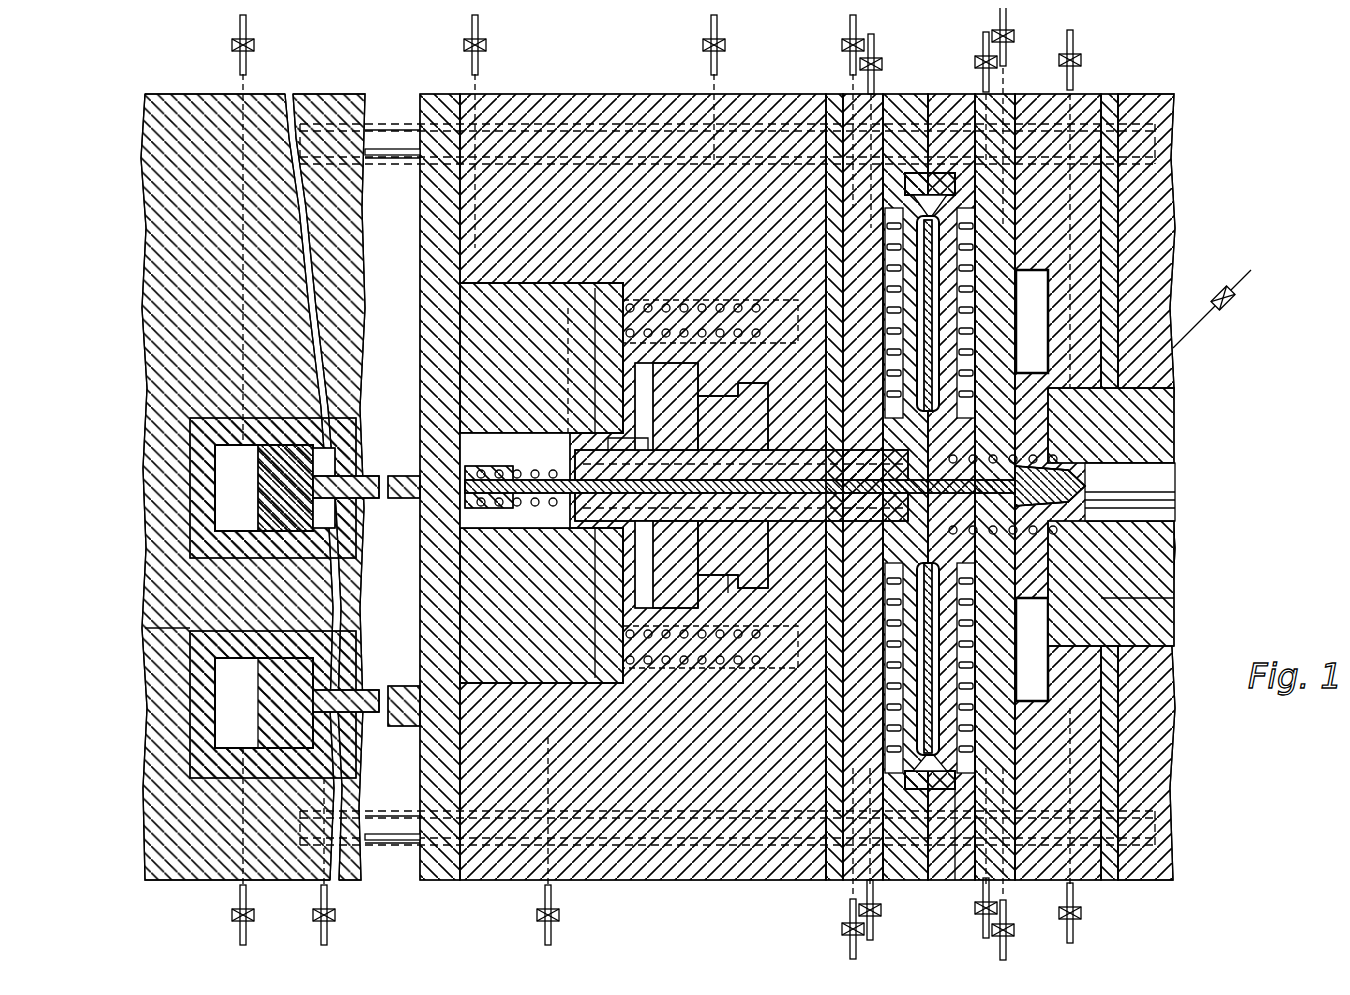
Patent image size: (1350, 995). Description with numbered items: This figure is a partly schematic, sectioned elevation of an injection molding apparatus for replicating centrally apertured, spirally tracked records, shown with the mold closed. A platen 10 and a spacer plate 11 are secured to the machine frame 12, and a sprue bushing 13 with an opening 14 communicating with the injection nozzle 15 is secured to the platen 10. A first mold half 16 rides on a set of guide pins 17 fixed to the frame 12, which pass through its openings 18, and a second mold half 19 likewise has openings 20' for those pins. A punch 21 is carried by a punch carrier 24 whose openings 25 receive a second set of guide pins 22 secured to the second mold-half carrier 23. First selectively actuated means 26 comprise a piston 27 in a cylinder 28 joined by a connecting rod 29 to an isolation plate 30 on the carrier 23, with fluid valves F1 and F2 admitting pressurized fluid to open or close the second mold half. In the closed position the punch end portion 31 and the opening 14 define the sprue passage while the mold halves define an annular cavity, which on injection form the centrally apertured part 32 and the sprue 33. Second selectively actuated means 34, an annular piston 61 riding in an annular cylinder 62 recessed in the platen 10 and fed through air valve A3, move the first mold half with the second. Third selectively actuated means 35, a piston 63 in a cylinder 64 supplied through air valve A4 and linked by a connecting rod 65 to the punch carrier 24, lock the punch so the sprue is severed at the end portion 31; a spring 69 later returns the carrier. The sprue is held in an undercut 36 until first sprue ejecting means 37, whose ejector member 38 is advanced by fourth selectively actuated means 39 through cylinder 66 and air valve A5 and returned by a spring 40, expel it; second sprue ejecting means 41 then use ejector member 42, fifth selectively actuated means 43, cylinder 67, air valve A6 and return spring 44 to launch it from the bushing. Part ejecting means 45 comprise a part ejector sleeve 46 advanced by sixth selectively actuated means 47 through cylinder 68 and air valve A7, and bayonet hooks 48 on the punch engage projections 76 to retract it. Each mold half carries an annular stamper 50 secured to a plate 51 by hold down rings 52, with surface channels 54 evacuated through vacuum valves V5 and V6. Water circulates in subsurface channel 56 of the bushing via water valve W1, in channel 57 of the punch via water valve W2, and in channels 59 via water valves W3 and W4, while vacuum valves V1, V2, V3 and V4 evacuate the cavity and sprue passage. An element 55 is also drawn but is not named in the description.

The platen 10 is at (1036, 86).
The spacer plate 11 is at (1100, 86).
The frame 12 is at (318, 86).
The sprue bushing 13 is at (1050, 440).
The opening 14 is at (1130, 491).
The injection nozzle 15 is at (1130, 540).
The first mold half 16 is at (958, 872).
The guide pins 17 is at (374, 122).
The openings 18 is at (946, 870).
The second mold half 19 is at (908, 872).
The openings 20' is at (803, 840).
The punch 21 is at (800, 513).
The second set of guide pins 22 is at (770, 292).
The second mold-half carrier 23 is at (592, 86).
The punch carrier 24 is at (500, 330).
The openings 25 is at (560, 275).
The first selectively actuated means 26 is at (130, 715).
The piston 27 is at (268, 745).
The cylinder 28 is at (182, 650).
The connecting rod 29 is at (375, 718).
The isolation plate 30 is at (432, 86).
The punch end portion 31 is at (880, 530).
The centrally apertured part 32 is at (930, 260).
The sprue 33 is at (972, 430).
The second selectively actuated means 34 is at (1050, 300).
The third selectively actuated means 35 is at (134, 483).
The undercut 36 is at (876, 400).
The first sprue ejecting means 37 is at (490, 425).
The first sprue ejector member 38 is at (776, 442).
The fourth selectively actuated means 39 is at (452, 440).
The spring 40 is at (520, 510).
The second sprue ejecting means 41 is at (1148, 506).
The second sprue ejector member 42 is at (985, 513).
The fifth selectively actuated means 43 is at (1062, 480).
The spring 44 is at (1095, 560).
The part ejecting means 45 is at (740, 385).
The part ejector sleeve 46 is at (758, 545).
The sixth selectively actuated means 47 is at (726, 596).
The bayonet hooks 48 is at (600, 462).
The annular stamper 50 is at (940, 338).
The plate 51 is at (936, 86).
The hold down rings 52 is at (936, 570).
The channel 54 is at (937, 676).
The spacer 55 is at (992, 668).
The subsurface channel 56 is at (1055, 448).
The subsurface channel 57 is at (666, 564).
The subsurface channel 59 is at (966, 272).
The piston 61 is at (1025, 262).
The cylinder 62 is at (1040, 330).
The piston 63 is at (262, 437).
The cylinder 64 is at (300, 440).
The connecting rod 65 is at (362, 490).
The cylinder 66 is at (452, 545).
The cylinder 67 is at (1150, 485).
The cylinder 68 is at (700, 388).
The spring 69 is at (664, 296).
The projections 76 is at (630, 425).
The air valve A3 is at (1090, 209).
The air valve A4 is at (262, 230).
The air valve A5 is at (495, 131).
The air valve A6 is at (1090, 825).
The air valve A7 is at (734, 91).
The water valve W1 is at (1212, 295).
The water valve W2 is at (571, 841).
The water valve W3 is at (1025, 118).
The water valve W4 is at (836, 111).
The vacuum valve V1 is at (974, 100).
The vacuum valve V2 is at (889, 131).
The vacuum valve V3 is at (1020, 864).
The vacuum valve V4 is at (836, 863).
The vacuum valve V5 is at (974, 853).
The vacuum valve V6 is at (888, 854).
The fluid valve F1 is at (342, 861).
The fluid valve F2 is at (261, 846).